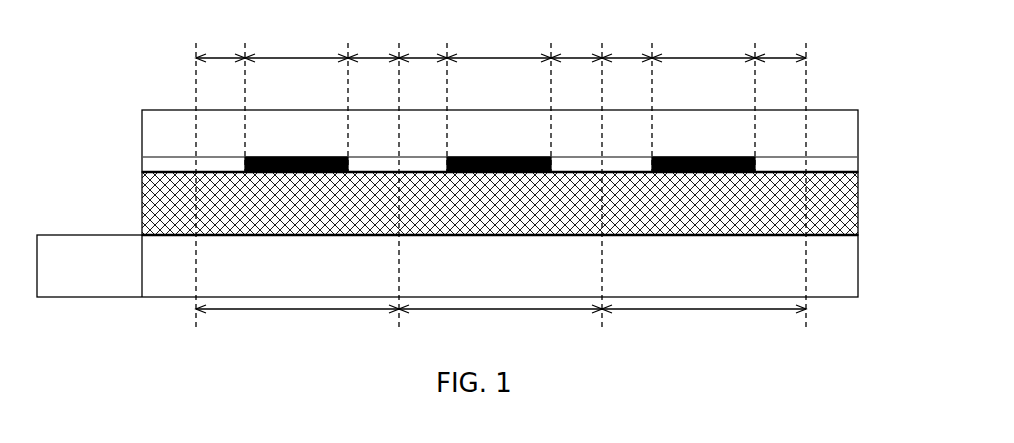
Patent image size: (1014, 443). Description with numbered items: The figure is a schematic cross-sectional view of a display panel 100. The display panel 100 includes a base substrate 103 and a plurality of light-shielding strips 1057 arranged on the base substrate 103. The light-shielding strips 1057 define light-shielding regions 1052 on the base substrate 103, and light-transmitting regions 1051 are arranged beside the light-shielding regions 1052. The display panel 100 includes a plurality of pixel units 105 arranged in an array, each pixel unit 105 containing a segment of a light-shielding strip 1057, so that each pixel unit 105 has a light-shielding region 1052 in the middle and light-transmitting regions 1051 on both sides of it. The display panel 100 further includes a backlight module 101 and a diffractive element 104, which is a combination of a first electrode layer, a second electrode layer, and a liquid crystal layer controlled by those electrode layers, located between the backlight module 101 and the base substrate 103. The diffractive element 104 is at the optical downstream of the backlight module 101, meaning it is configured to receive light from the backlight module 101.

The display panel 100 is at (88, 72).
The backlight module 101 is at (835, 287).
The base substrate 103 is at (173, 145).
The diffractive element 104 is at (143, 192).
The pixel unit 105 is at (501, 320).
The light-transmitting region 1051 is at (501, 43).
The light-shielding region 1052 is at (500, 43).
The light-shielding strip 1057 is at (732, 157).